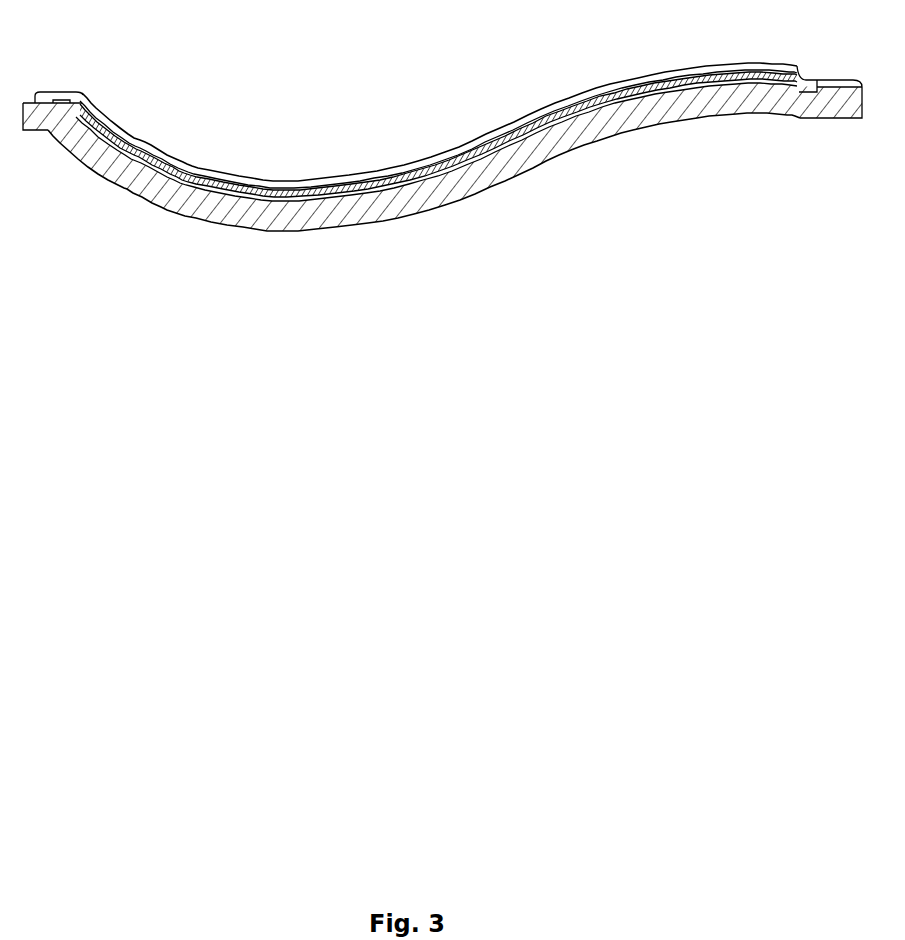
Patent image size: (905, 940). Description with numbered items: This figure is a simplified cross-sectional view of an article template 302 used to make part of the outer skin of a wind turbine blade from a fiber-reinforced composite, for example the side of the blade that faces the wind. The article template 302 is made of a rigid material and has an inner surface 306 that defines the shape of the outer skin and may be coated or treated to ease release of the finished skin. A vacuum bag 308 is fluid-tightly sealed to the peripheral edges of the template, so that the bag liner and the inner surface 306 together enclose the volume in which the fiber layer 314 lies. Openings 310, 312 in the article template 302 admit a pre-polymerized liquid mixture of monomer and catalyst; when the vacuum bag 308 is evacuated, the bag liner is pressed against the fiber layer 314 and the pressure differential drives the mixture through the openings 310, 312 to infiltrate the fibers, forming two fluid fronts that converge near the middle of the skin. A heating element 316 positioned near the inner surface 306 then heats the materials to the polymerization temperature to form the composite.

The article template 302 is at (325, 218).
The inner surface 306 is at (300, 187).
The vacuum bag 308 is at (709, 68).
The opening 310 is at (808, 80).
The opening 312 is at (60, 99).
The fiber layer 314 is at (141, 160).
The heating element 316 is at (251, 210).